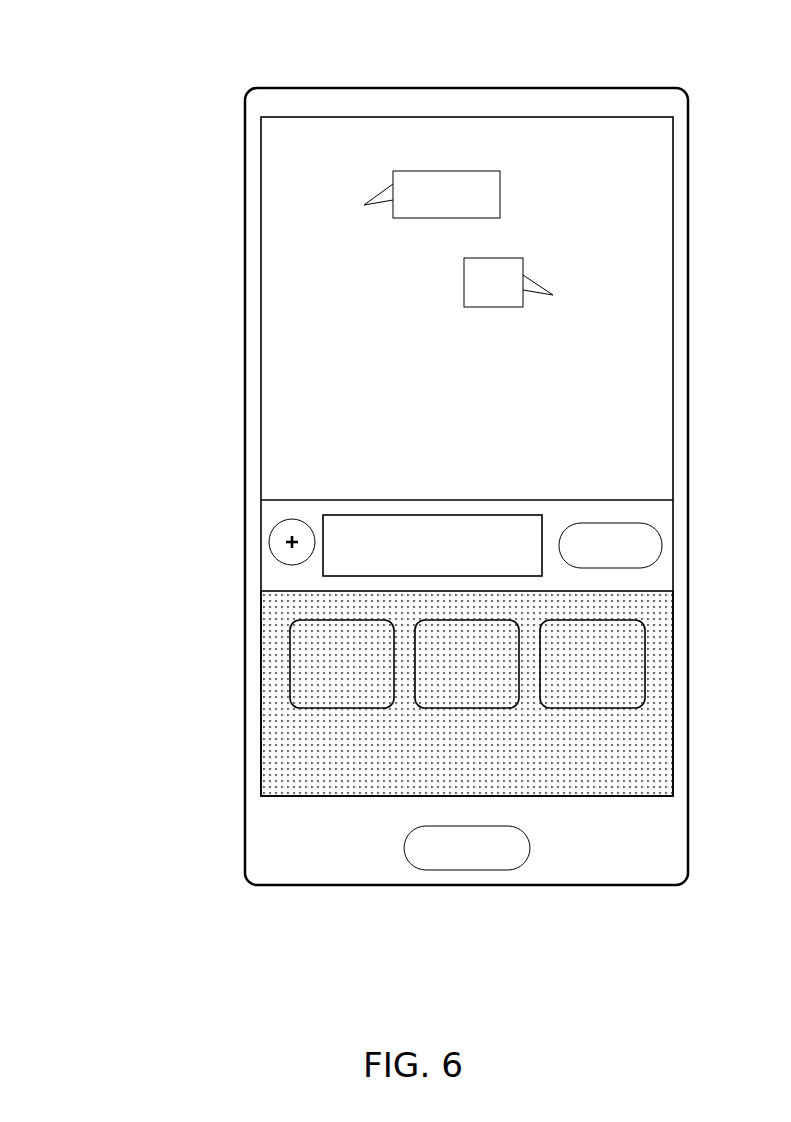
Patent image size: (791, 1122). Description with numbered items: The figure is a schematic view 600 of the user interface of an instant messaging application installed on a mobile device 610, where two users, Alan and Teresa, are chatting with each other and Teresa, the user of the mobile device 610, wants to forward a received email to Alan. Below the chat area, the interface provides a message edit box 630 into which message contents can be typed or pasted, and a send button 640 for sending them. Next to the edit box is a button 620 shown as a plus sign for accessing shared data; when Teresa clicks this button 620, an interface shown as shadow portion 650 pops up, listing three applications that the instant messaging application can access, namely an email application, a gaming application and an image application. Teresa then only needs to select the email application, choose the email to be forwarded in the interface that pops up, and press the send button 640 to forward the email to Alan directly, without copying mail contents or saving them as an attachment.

The schematic view 600 is at (380, 444).
The mobile device 610 is at (190, 40).
The button for accessing shared data 620 is at (161, 458).
The message edit box 630 is at (432, 506).
The send button 640 is at (618, 499).
The shadow portion 650 is at (266, 679).